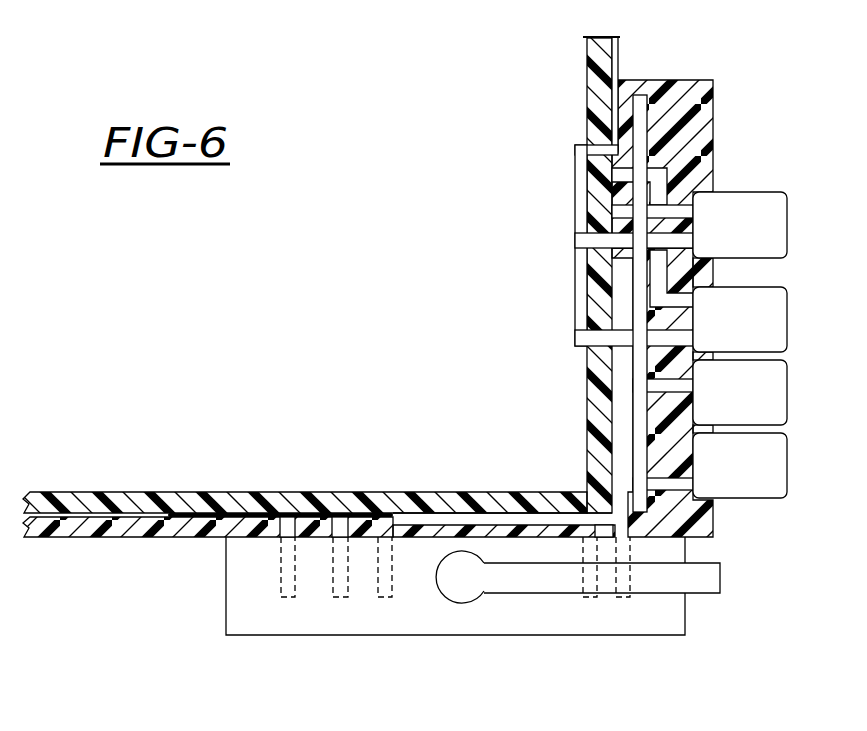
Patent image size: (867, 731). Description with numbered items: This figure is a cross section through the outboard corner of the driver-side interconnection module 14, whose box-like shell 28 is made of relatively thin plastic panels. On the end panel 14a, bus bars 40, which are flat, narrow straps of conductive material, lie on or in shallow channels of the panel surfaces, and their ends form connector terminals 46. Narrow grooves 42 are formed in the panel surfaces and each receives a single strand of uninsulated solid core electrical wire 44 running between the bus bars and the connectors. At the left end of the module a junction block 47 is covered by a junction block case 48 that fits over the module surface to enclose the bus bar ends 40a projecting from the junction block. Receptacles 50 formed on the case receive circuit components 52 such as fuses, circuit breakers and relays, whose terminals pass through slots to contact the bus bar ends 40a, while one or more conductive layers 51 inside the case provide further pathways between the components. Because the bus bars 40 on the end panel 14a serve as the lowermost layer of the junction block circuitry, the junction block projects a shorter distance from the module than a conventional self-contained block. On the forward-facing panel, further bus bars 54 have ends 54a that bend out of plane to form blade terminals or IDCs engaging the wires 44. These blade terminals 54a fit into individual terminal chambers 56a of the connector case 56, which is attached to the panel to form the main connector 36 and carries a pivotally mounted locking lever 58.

The driver-side interconnection module 14 is at (164, 492).
The end panel 14a is at (592, 80).
The box-like shell 28 is at (349, 489).
The main connector 36 is at (272, 666).
The bus bars 40 is at (575, 196).
The bus bar ends 40a is at (591, 141).
The grooves 42 is at (241, 500).
The electrical wire 44 is at (619, 55).
The connector terminals 46 is at (597, 155).
The junction block 47 is at (720, 109).
The junction block case 48 is at (713, 128).
The receptacles 50 is at (724, 182).
The conductive layers 51 is at (640, 266).
The circuit components 52 is at (769, 248).
The bus bars 54 is at (437, 517).
The bus bar blade terminals 54a is at (389, 593).
The connector case 56 is at (232, 610).
The terminal chambers 56a is at (372, 597).
The locking lever 58 is at (710, 576).